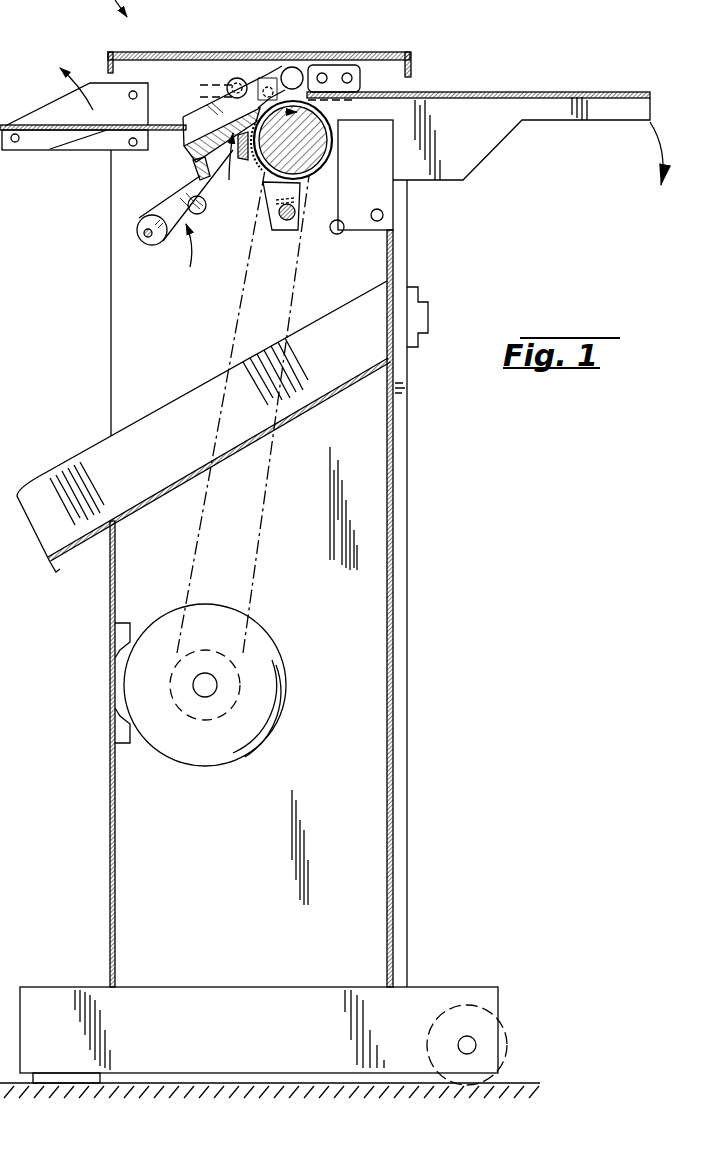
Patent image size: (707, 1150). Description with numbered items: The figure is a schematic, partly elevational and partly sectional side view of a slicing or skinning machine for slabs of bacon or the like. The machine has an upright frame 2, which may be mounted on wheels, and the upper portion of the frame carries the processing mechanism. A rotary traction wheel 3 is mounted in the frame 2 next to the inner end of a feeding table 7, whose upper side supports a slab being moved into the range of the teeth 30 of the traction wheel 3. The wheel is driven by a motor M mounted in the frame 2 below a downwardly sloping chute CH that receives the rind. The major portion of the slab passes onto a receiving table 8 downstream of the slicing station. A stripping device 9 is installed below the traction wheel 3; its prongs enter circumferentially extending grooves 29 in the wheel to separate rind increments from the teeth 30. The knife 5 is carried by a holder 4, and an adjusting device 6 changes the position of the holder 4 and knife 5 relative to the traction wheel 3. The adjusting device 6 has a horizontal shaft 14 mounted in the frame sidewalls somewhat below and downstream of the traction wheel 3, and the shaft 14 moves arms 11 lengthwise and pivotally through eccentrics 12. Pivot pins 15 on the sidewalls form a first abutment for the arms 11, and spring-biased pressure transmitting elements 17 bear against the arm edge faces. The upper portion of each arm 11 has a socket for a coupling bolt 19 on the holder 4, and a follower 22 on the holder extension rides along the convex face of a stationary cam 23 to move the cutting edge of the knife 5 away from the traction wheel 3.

The frame 2 is at (396, 553).
The traction wheel 3 is at (312, 164).
The holder 4 is at (232, 168).
The knife 5 is at (274, 94).
The adjusting device 6 is at (187, 259).
The feeding table 7 is at (552, 90).
The receiving table 8 is at (60, 120).
The stripping device 9 is at (277, 228).
The arm 11 is at (177, 193).
The eccentric 12 is at (158, 241).
The shaft 14 is at (141, 240).
The pivot pin 15 is at (202, 214).
The pressure transmitting element 17 is at (238, 78).
The coupling bolt 19 is at (262, 82).
The follower 22 is at (291, 67).
The cam 23 is at (335, 72).
The grooves 29 is at (330, 160).
The teeth 30 is at (256, 162).
The chute CH is at (342, 386).
The motor M is at (273, 637).